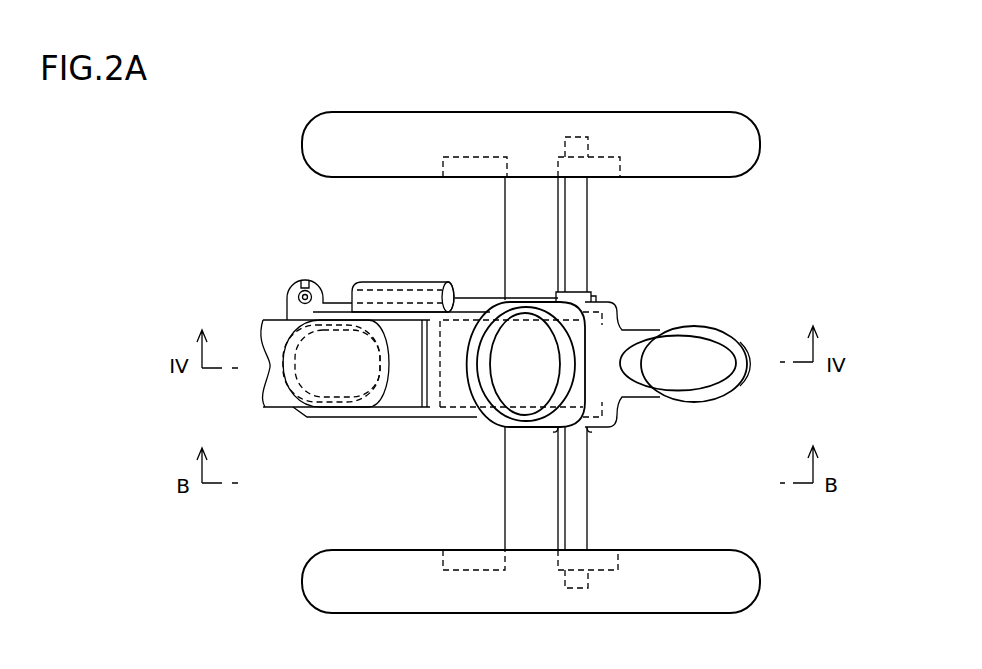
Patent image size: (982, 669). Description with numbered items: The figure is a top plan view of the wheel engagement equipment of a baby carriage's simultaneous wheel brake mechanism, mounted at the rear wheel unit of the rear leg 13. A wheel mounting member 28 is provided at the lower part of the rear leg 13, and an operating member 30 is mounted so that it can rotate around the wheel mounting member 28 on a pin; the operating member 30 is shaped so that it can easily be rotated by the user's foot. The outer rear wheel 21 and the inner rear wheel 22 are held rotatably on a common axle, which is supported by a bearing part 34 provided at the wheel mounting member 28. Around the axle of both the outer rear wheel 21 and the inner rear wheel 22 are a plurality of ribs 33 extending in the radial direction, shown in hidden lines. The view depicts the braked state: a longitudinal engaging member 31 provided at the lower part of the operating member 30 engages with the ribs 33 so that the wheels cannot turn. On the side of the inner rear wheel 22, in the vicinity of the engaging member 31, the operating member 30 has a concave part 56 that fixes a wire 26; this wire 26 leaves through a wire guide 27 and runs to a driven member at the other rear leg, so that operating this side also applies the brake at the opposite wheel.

The rear leg 13 is at (277, 330).
The outer rear wheel 21 is at (747, 582).
The inner rear wheel 22 is at (748, 142).
The wire 26 is at (535, 300).
The wire guide 27 is at (387, 281).
The wheel mounting member 28 is at (385, 417).
The operating member 30 is at (720, 363).
The engaging member 31 is at (577, 497).
The ribs 33 is at (476, 157).
The bearing part 34 is at (525, 499).
The concave part 56 is at (592, 292).